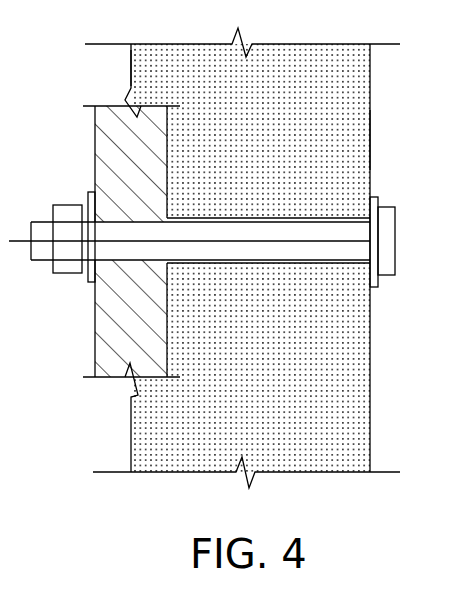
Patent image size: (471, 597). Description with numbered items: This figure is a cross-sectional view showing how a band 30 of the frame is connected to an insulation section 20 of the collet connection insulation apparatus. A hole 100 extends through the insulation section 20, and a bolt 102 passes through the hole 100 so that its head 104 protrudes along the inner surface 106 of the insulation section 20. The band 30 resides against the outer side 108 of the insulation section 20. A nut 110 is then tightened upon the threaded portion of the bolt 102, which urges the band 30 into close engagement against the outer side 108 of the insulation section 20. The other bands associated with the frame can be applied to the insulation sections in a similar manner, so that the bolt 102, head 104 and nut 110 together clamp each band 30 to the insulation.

The insulation section 20 is at (362, 91).
The band 30 is at (95, 157).
The hole 100 is at (239, 243).
The bolt 102 is at (347, 250).
The head 104 is at (387, 243).
The inner surface 106 is at (370, 140).
The outer side 108 is at (131, 78).
The nut 110 is at (67, 267).